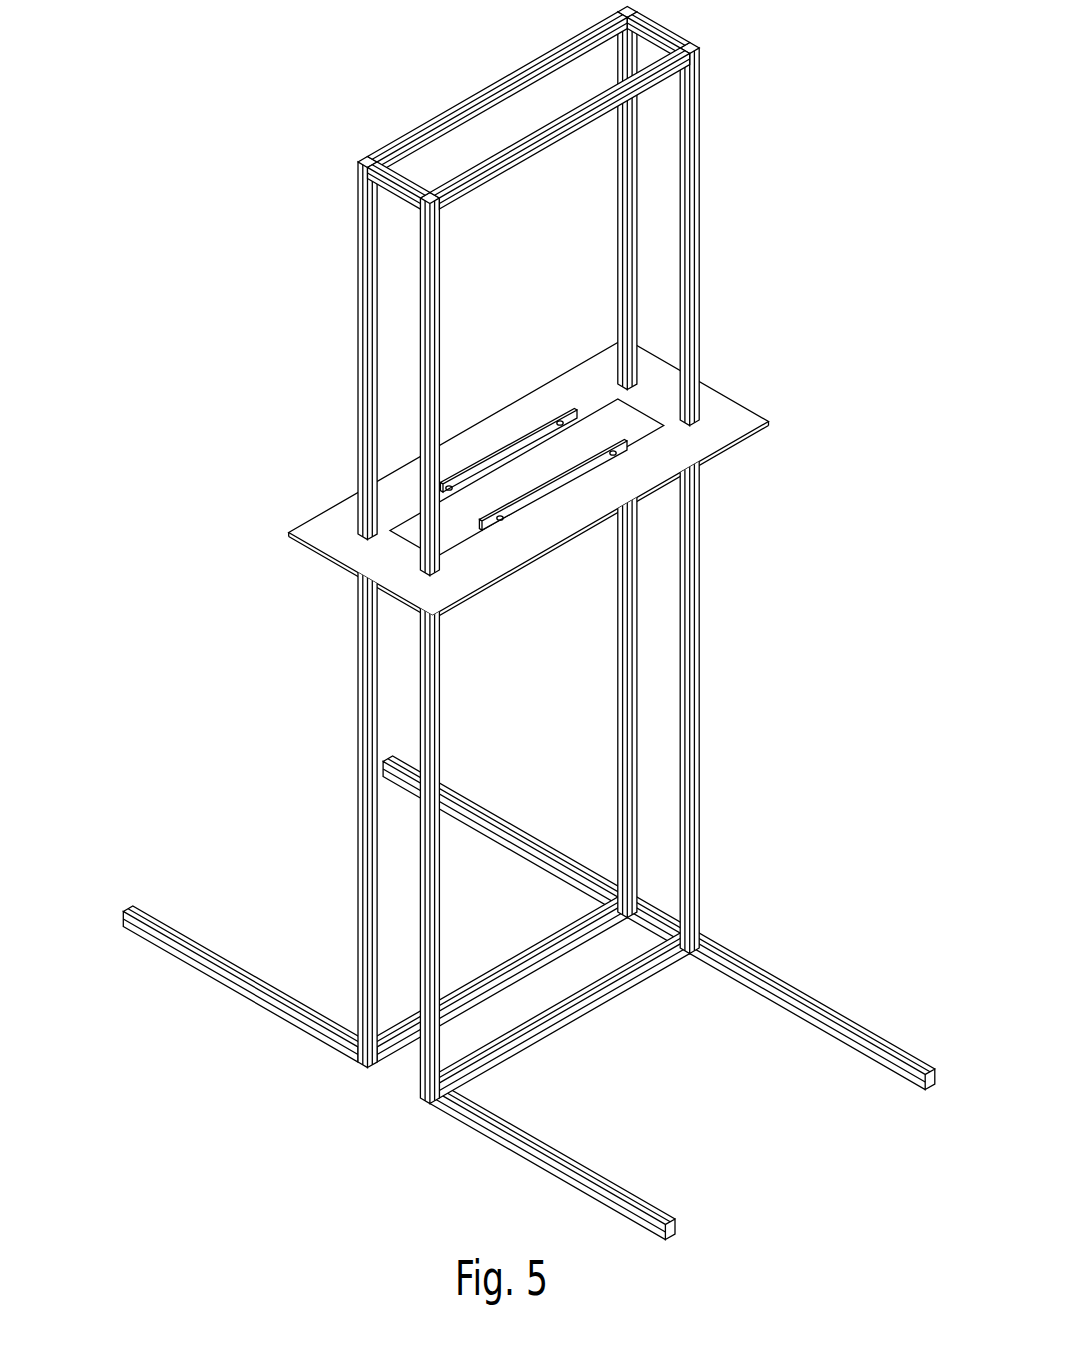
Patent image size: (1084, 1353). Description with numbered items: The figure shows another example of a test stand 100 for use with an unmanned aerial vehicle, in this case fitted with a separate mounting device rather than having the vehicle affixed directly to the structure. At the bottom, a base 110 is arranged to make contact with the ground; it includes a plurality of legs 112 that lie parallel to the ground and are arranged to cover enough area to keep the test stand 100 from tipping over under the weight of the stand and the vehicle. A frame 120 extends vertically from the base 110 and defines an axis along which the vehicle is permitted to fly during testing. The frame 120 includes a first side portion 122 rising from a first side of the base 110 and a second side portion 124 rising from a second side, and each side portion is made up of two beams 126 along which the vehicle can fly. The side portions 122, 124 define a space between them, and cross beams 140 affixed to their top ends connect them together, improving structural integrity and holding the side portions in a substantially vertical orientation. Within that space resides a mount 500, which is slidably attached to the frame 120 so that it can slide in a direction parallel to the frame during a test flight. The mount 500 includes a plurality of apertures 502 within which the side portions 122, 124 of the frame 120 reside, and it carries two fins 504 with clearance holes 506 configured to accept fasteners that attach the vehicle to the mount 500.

The test stand 100 is at (158, 44).
The base 110 is at (529, 1004).
The legs 112 is at (197, 970).
The frame 120 is at (535, 555).
The first side portion 122 is at (320, 348).
The second side portion 124 is at (738, 218).
The beams 126 is at (637, 158).
The cross beams 140 is at (440, 113).
The mount 500 is at (482, 490).
The apertures 502 is at (357, 537).
The fins 504 is at (603, 444).
The clearance holes 506 is at (556, 424).